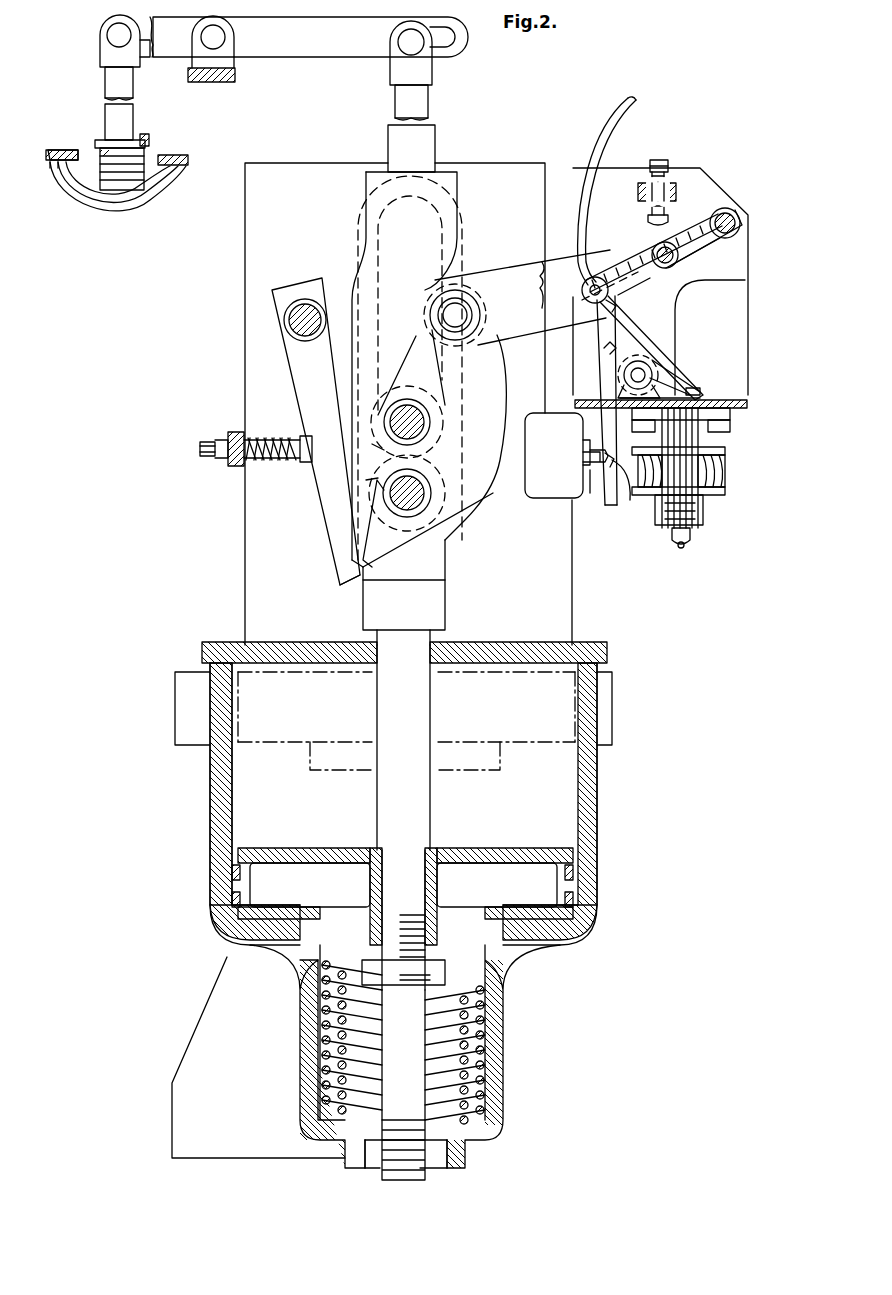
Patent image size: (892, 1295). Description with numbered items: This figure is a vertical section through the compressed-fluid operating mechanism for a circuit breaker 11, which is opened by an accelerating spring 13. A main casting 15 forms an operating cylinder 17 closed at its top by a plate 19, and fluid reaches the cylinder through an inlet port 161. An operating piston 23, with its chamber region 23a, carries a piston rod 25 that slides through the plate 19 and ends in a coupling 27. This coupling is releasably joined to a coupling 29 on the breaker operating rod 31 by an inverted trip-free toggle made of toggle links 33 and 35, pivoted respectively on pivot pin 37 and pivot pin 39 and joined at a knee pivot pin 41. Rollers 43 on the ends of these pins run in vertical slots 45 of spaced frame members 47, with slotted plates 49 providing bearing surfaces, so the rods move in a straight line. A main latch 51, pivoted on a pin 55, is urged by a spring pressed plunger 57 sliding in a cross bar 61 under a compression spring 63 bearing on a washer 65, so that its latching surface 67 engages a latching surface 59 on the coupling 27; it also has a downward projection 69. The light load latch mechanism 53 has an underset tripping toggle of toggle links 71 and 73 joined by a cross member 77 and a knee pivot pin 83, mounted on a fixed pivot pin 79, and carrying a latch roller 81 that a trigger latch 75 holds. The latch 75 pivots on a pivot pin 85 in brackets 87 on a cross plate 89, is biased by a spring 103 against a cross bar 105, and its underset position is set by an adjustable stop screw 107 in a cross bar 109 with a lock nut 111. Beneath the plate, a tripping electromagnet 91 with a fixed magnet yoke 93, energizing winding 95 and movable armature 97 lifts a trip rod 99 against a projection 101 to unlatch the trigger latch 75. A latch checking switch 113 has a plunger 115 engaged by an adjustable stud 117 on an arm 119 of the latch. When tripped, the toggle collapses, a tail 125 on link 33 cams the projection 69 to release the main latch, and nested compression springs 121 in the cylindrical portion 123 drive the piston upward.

The circuit breaker 11 is at (183, 133).
The accelerating spring 13 is at (96, 148).
The main casting 15 is at (210, 802).
The operating cylinder 17 is at (578, 800).
The plate 19 is at (290, 650).
The operating piston 23 is at (300, 850).
The piston chamber 23a is at (255, 735).
The piston rod 25 is at (430, 812).
The coupling 27 is at (438, 600).
The coupling 29 is at (462, 200).
The breaker operating rod 31 is at (432, 137).
The toggle link 33 is at (502, 494).
The toggle link 35 is at (420, 330).
The pivot pin 37 is at (430, 490).
The pivot pin 39 is at (432, 424).
The knee pivot pin 41 is at (462, 300).
The rollers 43 is at (450, 392).
The vertical slots 45 is at (372, 447).
The frame members 47 is at (243, 570).
The plates 49 is at (355, 232).
The main latch 51 is at (296, 398).
The light load latch mechanism 53 is at (778, 283).
The pin 55 is at (298, 295).
The spring pressed plunger 57 is at (210, 458).
The latching surface 59 is at (362, 488).
The cross bar 61 is at (240, 428).
The compression spring 63 is at (292, 435).
The washer 65 is at (300, 478).
The latching surface 67 is at (366, 480).
The projection 69 is at (340, 570).
The toggle link 71 is at (742, 235).
The toggle link 73 is at (503, 262).
The trigger latch 75 is at (625, 335).
The cross member 77 is at (675, 225).
The fixed pivot pin 79 is at (740, 218).
The latch roller 81 is at (584, 286).
The knee pivot pin 83 is at (680, 262).
The pivot pin 85 is at (622, 378).
The brackets 87 is at (658, 362).
The cross plate 89 is at (740, 398).
The tripping electromagnet 91 is at (776, 490).
The fixed magnet yoke 93 is at (704, 447).
The energizing winding 95 is at (712, 468).
The movable armature 97 is at (700, 515).
The trip rod 99 is at (685, 392).
The projection 101 is at (655, 383).
The spring 103 is at (614, 346).
The cross bar 105 is at (612, 302).
The adjustable stop screw 107 is at (648, 206).
The cross bar 109 is at (640, 190).
The lock nut 111 is at (670, 172).
The latch checking switch 113 is at (575, 500).
The plunger 115 is at (590, 493).
The adjustable stud 117 is at (594, 478).
The arm 119 is at (607, 465).
The nested compression springs 121 is at (340, 1003).
The cylindrical portion 123 is at (498, 1005).
The tail 125 is at (372, 578).
The inlet port 161 is at (438, 645).